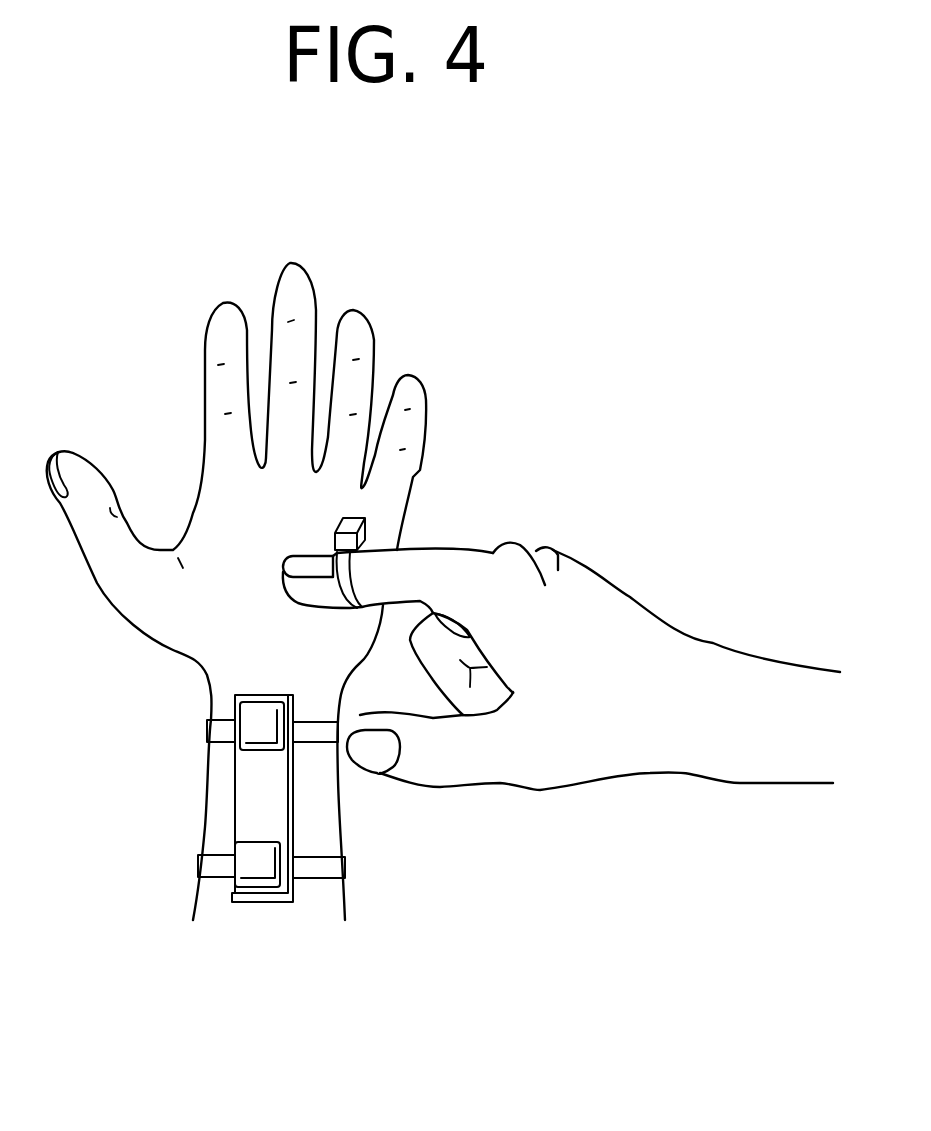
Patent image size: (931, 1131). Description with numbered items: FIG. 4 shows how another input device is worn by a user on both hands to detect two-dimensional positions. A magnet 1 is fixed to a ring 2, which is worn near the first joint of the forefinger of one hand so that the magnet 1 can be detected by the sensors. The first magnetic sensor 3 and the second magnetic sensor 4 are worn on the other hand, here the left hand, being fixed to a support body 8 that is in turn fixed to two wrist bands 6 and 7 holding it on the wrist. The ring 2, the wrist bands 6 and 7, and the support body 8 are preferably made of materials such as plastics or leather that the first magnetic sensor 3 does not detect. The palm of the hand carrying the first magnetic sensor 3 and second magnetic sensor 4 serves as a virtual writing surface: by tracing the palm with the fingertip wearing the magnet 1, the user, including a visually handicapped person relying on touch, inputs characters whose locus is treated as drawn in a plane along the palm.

The magnet 1 is at (363, 523).
The ring 2 is at (410, 570).
The first magnetic sensor 3 is at (253, 717).
The second magnetic sensor 4 is at (250, 870).
The wrist band 6 is at (217, 730).
The wrist band 7 is at (333, 868).
The support body 8 is at (293, 793).